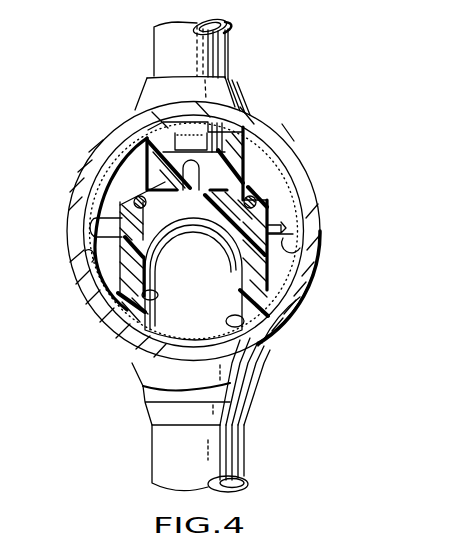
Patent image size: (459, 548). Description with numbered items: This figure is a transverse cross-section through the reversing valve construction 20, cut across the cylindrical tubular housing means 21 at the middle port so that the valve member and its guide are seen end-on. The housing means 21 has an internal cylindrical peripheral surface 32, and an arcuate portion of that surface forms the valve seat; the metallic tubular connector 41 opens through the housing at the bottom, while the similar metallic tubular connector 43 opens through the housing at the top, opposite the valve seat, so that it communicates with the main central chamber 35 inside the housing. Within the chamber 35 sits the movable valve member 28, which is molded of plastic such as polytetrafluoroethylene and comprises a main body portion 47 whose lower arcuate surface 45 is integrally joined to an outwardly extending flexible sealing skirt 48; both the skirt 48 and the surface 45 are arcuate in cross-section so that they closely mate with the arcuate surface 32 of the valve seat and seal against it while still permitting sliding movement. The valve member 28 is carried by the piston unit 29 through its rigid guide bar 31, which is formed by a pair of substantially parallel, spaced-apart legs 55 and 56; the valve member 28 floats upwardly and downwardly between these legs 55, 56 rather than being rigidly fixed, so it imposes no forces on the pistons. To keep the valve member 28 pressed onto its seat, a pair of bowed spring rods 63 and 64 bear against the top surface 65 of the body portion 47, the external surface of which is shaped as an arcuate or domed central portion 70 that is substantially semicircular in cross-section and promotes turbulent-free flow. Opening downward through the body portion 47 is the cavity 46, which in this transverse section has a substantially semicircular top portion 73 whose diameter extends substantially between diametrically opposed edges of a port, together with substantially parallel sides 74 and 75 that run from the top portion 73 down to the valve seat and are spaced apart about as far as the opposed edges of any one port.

The reversing valve construction 20 is at (311, 64).
The tubular housing means 21 is at (297, 157).
The movable valve member 28 is at (216, 144).
The piston unit 29 is at (134, 189).
The guide bar 31 is at (274, 214).
The internal cylindrical peripheral surface 32 is at (86, 256).
The main central chamber 35 is at (110, 272).
The metallic tubular connector 41 is at (155, 451).
The metallic tubular connector 43 is at (158, 48).
The arcuate surface 45 is at (283, 317).
The cavity 46 is at (140, 316).
The main body portion 47 is at (146, 146).
The flexible sealing skirt 48 is at (110, 282).
The leg 55 is at (104, 218).
The leg 56 is at (284, 238).
The spring rod 63 is at (126, 198).
The spring rod 64 is at (283, 170).
The top surface 65 is at (247, 205).
The domed central portion 70 is at (160, 172).
The semicircular top portion 73 is at (204, 224).
The parallel side 74 is at (138, 341).
The parallel side 75 is at (262, 347).